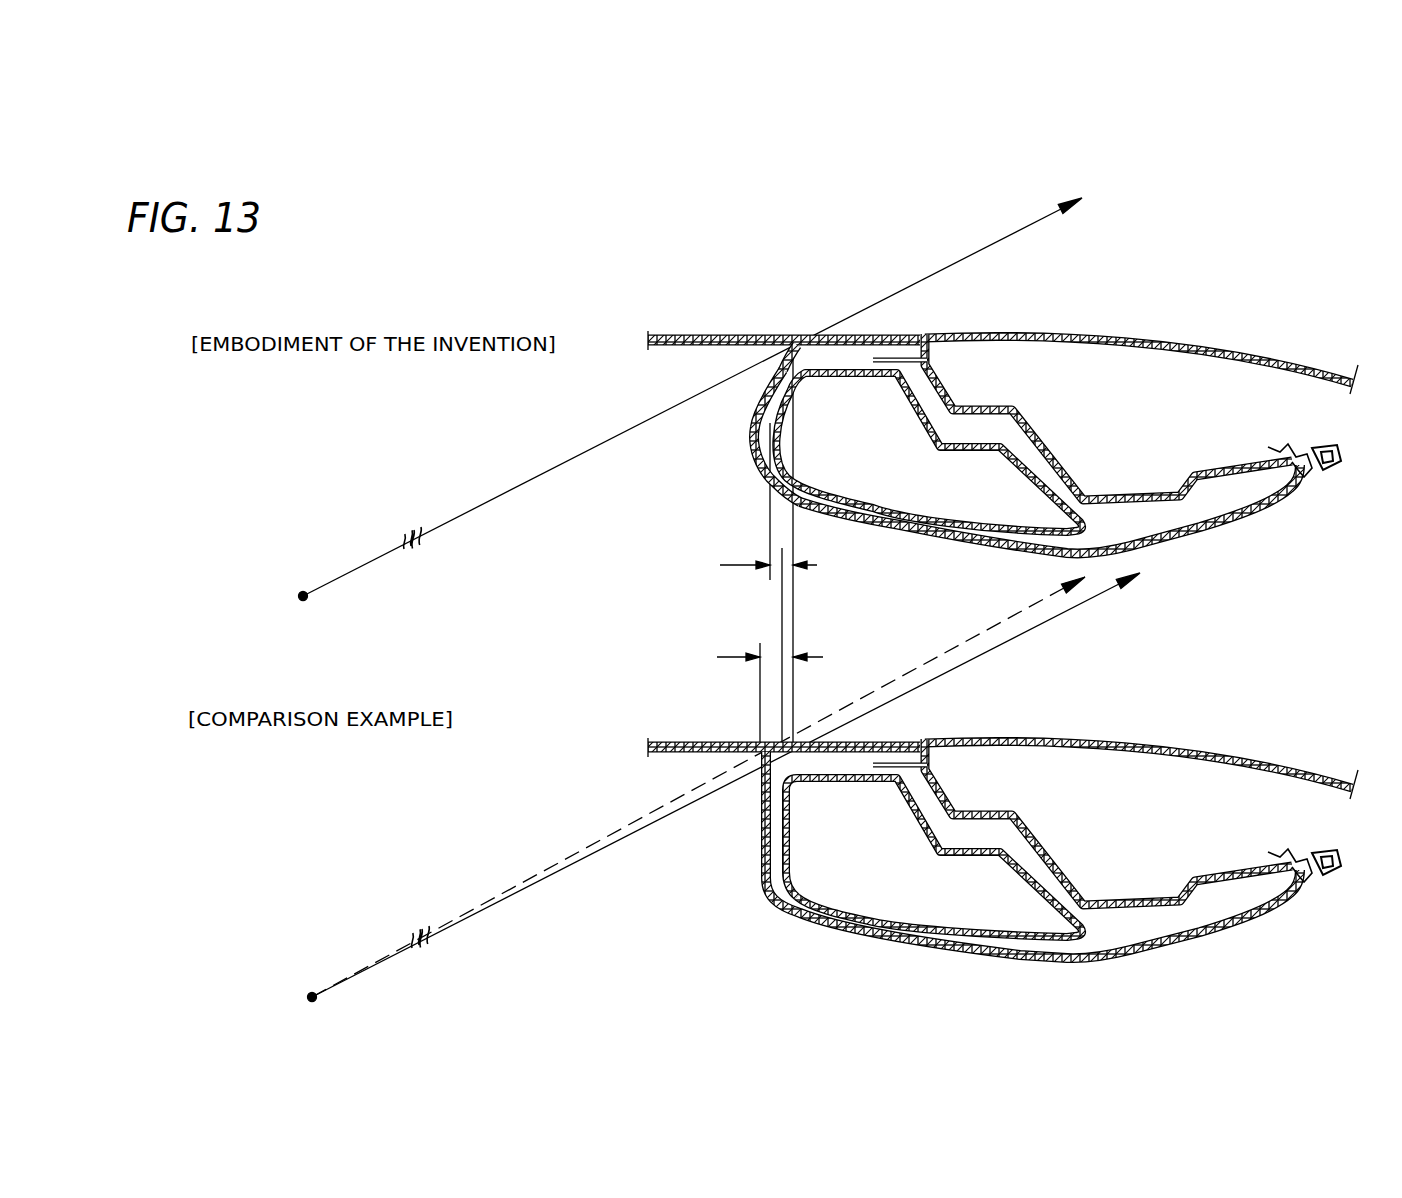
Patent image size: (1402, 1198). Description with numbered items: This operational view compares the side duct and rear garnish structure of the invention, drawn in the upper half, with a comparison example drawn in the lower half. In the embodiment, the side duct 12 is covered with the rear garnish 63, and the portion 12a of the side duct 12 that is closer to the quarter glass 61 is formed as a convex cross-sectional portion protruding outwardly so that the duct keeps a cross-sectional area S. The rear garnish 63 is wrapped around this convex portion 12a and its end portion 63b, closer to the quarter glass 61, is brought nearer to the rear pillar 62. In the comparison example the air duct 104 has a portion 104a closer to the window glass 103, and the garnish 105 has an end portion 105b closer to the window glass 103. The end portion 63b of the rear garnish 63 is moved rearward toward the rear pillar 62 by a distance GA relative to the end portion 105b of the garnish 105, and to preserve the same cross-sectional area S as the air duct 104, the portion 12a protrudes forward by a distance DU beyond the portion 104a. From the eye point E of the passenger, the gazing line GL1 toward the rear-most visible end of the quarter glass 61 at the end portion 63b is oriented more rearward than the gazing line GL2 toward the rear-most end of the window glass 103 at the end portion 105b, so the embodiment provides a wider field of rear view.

The quarter glass 61 is at (683, 333).
The end portion of the rear garnish 63b is at (787, 332).
The portion of the side duct 12a is at (753, 425).
The side duct 12 is at (905, 516).
The rear garnish 63 is at (1015, 425).
The rear pillar 62 is at (1227, 493).
The window glass 103 is at (658, 740).
The end portion of the garnish 105b is at (758, 742).
The portion of the air duct 104a is at (780, 802).
The air duct 104 is at (871, 901).
The garnish 105 is at (1015, 861).
The point E is at (303, 594).
The cross-sectional area S is at (866, 652).
The gazing line GL1 is at (983, 250).
The gazing line GL2 is at (1002, 621).
The distance DU is at (765, 548).
The distance GA is at (763, 690).